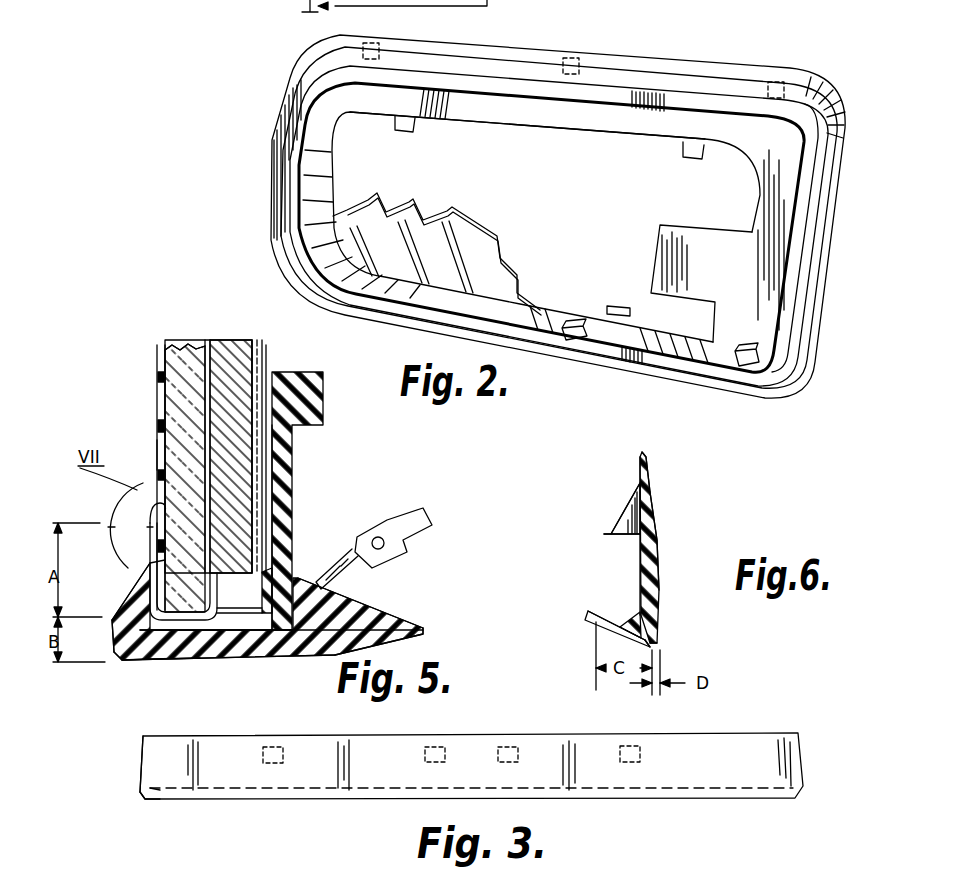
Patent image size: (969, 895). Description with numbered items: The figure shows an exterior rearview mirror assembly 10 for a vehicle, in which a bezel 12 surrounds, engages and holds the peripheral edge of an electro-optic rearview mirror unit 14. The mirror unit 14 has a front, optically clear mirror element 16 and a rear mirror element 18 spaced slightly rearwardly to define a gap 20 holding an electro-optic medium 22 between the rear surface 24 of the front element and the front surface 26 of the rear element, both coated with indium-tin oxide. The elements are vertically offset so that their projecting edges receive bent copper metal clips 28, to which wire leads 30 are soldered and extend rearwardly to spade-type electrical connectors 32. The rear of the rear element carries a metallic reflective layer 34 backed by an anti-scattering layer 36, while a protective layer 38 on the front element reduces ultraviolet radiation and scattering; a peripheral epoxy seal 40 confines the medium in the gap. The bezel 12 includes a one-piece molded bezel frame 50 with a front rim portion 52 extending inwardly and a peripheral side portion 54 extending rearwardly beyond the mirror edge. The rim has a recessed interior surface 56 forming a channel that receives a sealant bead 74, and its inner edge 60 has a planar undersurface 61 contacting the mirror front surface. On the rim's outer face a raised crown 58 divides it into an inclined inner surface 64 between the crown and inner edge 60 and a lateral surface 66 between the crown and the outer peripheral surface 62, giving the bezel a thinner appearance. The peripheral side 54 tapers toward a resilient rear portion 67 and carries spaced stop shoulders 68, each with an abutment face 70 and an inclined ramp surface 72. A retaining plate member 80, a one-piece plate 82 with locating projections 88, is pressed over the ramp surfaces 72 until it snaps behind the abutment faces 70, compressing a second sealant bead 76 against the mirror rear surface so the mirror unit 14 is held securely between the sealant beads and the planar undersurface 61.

In FIG. 2, the exterior rearview mirror assembly 10 is at (767, 58).
In FIG. 2, the bezel 12 is at (678, 57).
In FIG. 2, the rearview mirror unit 14 is at (418, 240).
In FIG. 5, the rearview mirror unit 14 is at (150, 340).
In FIG. 5, the front mirror element 16 is at (160, 362).
In FIG. 5, the rear mirror element 18 is at (243, 340).
In FIG. 5, the gap 20 is at (203, 337).
In FIG. 5, the electro-optic medium 22 is at (197, 390).
In FIG. 5, the rear surface of front element 24 is at (217, 338).
In FIG. 5, the front surface of rear element 26 is at (187, 343).
In FIG. 5, the metal clips 28 is at (270, 572).
In FIG. 5, the wire leads 30 is at (267, 652).
In FIG. 5, the electrical connectors 32 is at (413, 508).
In FIG. 5, the reflective layer 34 is at (267, 363).
In FIG. 5, the anti-scattering layer 36 is at (260, 340).
In FIG. 5, the protective front layer 38 is at (160, 453).
In FIG. 5, the peripheral seal 40 is at (278, 513).
In FIG. 2, the bezel frame 50 is at (782, 382).
In FIG. 5, the bezel frame 50 is at (266, 660).
In FIG. 6, the bezel frame 50 is at (600, 572).
In FIG. 3, the bezel frame 50 is at (788, 703).
In FIG. 5, the front rim portion 52 is at (128, 590).
In FIG. 6, the front rim portion 52 is at (633, 627).
In FIG. 5, the peripheral side portion 54 is at (170, 662).
In FIG. 6, the peripheral side portion 54 is at (648, 548).
In FIG. 3, the peripheral side portion 54 is at (712, 770).
In FIG. 5, the recessed interior surface 56 is at (130, 524).
In FIG. 2, the crown 58 is at (450, 92).
In FIG. 5, the crown 58 is at (115, 613).
In FIG. 6, the crown 58 is at (657, 650).
In FIG. 5, the inner edge 60 is at (150, 522).
In FIG. 6, the inner edge 60 is at (588, 612).
In FIG. 5, the planar undersurface 61 is at (158, 504).
In FIG. 5, the outer peripheral surface 62 is at (150, 662).
In FIG. 6, the outer peripheral surface 62 is at (661, 583).
In FIG. 3, the outer peripheral surface 62 is at (138, 787).
In FIG. 2, the inner surface 64 is at (780, 295).
In FIG. 5, the inner surface 64 is at (140, 568).
In FIG. 6, the inner surface 64 is at (623, 630).
In FIG. 3, the inner surface 64 is at (162, 797).
In FIG. 2, the lateral surface 66 is at (800, 227).
In FIG. 5, the lateral surface 66 is at (140, 628).
In FIG. 6, the lateral surface 66 is at (657, 630).
In FIG. 3, the lateral surface 66 is at (142, 798).
In FIG. 5, the rear portion 67 is at (390, 633).
In FIG. 6, the rear portion 67 is at (647, 497).
In FIG. 3, the rear portion 67 is at (795, 752).
In FIG. 2, the stop shoulders 68 is at (362, 47).
In FIG. 5, the stop shoulders 68 is at (350, 607).
In FIG. 6, the stop shoulders 68 is at (627, 518).
In FIG. 3, the stop shoulders 68 is at (423, 739).
In FIG. 2, the abutment face 70 is at (748, 366).
In FIG. 6, the abutment face 70 is at (618, 537).
In FIG. 2, the ramp surface 72 is at (758, 350).
In FIG. 6, the ramp surface 72 is at (630, 503).
In FIG. 5, the sealant bead 74 is at (135, 640).
In FIG. 5, the second sealant bead 76 is at (284, 530).
In FIG. 2, the retaining plate member 80 is at (632, 143).
In FIG. 5, the retaining plate member 80 is at (291, 451).
In FIG. 2, the plate 82 is at (543, 117).
In FIG. 2, the locating projections 88 is at (398, 131).